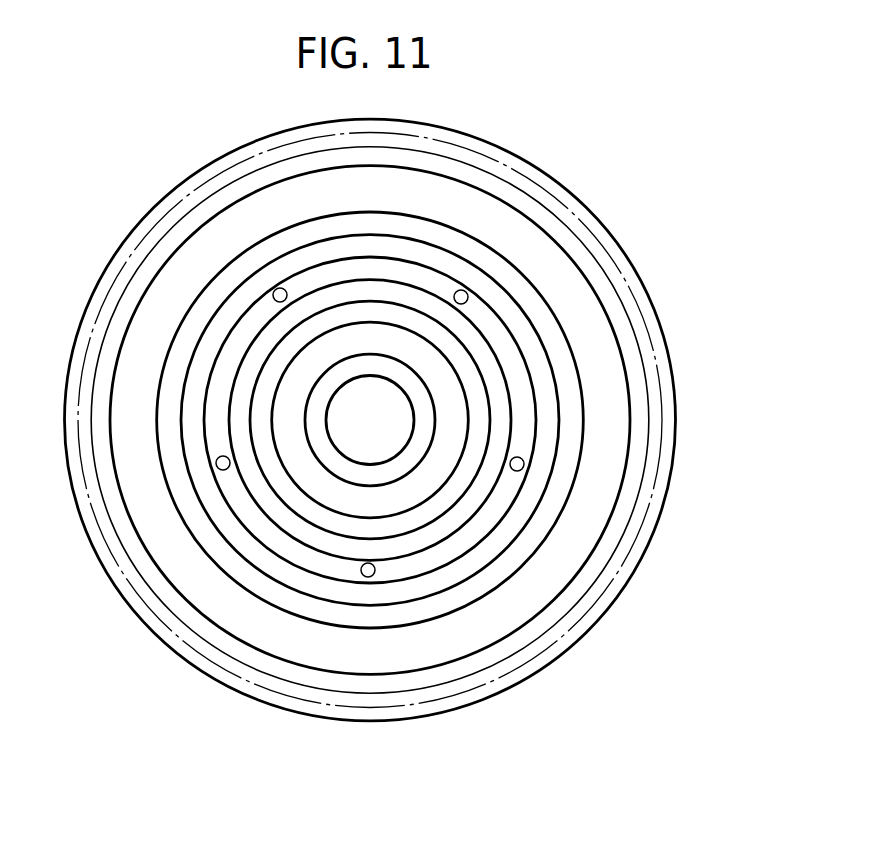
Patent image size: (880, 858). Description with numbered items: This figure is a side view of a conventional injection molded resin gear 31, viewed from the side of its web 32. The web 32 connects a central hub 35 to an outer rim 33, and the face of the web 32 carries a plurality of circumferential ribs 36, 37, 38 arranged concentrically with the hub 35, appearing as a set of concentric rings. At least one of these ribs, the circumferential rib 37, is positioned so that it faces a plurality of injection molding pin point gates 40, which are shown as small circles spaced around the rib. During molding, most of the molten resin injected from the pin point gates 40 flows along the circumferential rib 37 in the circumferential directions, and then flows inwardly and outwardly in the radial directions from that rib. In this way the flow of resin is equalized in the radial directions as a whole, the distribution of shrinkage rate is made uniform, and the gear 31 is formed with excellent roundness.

The injection molded resin gear 31 is at (575, 172).
The web 32 is at (565, 282).
The rim 33 is at (603, 542).
The hub 35 is at (372, 467).
The circumferential rib 36 is at (477, 367).
The circumferential rib 37 is at (532, 392).
The circumferential rib 38 is at (578, 443).
The injection molding pin point gate 40 is at (274, 287).